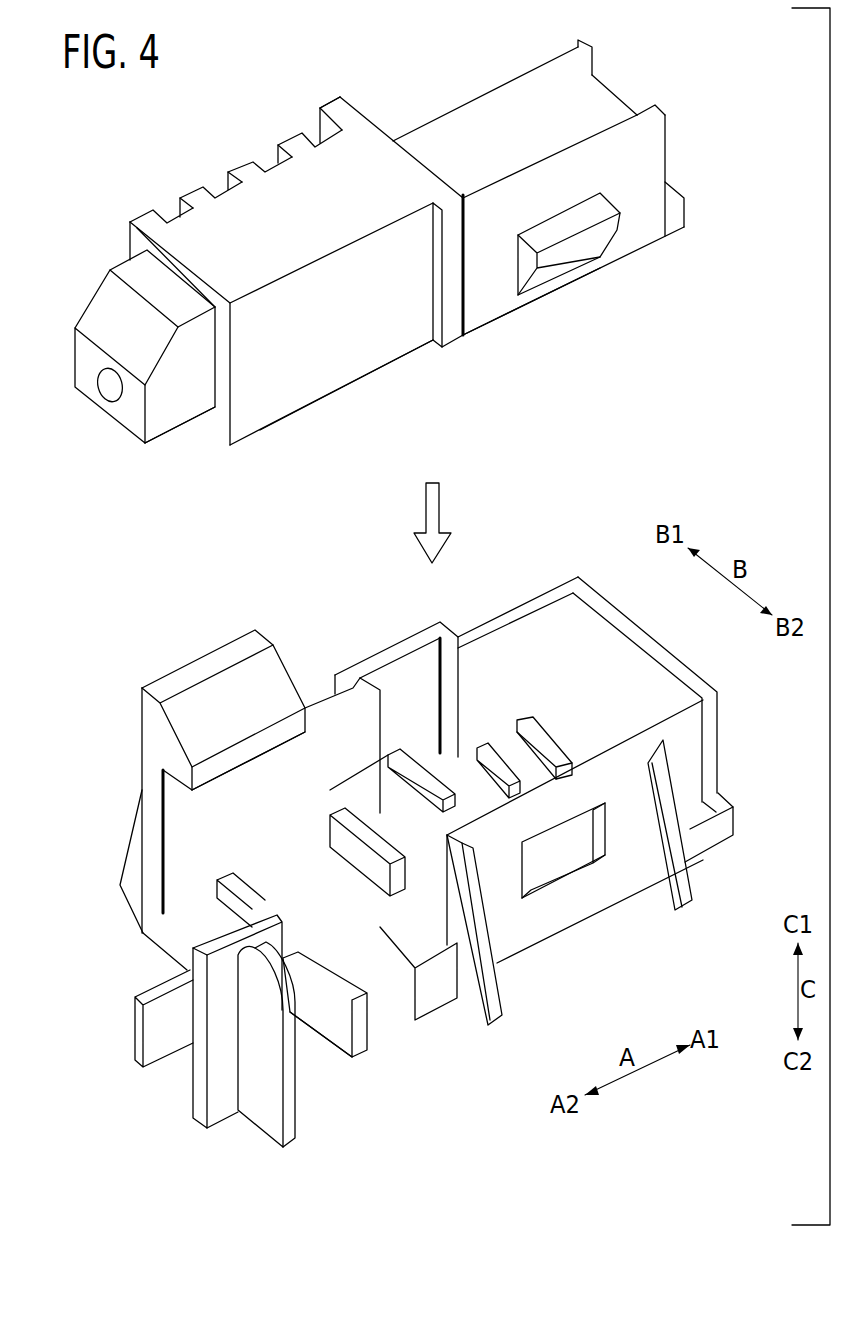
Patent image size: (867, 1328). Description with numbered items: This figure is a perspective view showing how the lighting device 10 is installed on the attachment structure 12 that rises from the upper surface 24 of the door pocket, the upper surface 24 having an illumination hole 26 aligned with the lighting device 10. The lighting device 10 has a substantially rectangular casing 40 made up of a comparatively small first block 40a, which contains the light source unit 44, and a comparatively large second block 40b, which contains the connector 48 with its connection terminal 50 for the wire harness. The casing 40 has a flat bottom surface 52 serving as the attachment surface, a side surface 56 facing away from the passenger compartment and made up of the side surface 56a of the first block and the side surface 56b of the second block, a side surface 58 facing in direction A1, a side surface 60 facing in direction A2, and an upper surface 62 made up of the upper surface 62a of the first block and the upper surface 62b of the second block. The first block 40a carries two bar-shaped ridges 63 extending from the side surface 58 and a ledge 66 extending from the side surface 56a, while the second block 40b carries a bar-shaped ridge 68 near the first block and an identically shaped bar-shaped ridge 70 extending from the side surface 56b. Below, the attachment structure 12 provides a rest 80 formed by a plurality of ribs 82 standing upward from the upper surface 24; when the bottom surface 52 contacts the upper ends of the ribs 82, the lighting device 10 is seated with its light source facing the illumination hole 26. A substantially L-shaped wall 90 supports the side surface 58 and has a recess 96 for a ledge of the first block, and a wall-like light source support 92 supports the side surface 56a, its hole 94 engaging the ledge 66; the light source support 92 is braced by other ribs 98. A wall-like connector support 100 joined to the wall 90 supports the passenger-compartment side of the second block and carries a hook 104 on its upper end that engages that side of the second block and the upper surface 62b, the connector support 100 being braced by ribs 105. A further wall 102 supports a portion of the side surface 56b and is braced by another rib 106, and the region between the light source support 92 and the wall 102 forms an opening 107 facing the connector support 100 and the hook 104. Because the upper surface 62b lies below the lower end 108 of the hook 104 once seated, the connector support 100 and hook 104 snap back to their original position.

The lighting device 10 is at (98, 262).
The attachment structure 12 is at (732, 754).
The upper surface 24 is at (563, 730).
The illumination hole 26 is at (422, 933).
The casing 40 is at (274, 190).
The first block 40a is at (523, 87).
The second block 40b is at (210, 217).
The light source unit 44 is at (485, 94).
The connector 48 is at (236, 160).
The connection terminal 50 is at (120, 315).
The bottom surface 52 is at (628, 250).
The side surface 56 is at (417, 404).
The side surface 56a is at (498, 298).
The side surface 56b is at (405, 330).
The side surface 58 is at (614, 92).
The side surface 60 is at (217, 418).
The upper surface 62 is at (340, 53).
The upper surface 62a is at (457, 140).
The upper surface 62b is at (362, 167).
The bar-shaped ridges 63 is at (587, 47).
The ledge 66 is at (577, 250).
The bar-shaped ridge 68 is at (332, 110).
The bar-shaped ridge 70 is at (453, 247).
The rest 80 is at (585, 728).
The ribs 82 is at (350, 810).
The wall 90 is at (500, 625).
The light source support 92 is at (632, 870).
The hole 94 is at (580, 863).
The recess 96 is at (398, 675).
The ribs 98 is at (500, 980).
The connector support 100 is at (152, 803).
The wall 102 is at (218, 1107).
The hook 104 is at (207, 702).
The ribs 105 is at (135, 862).
The rib 106 is at (290, 1150).
The opening 107 is at (328, 1060).
The lower end 108 is at (232, 772).